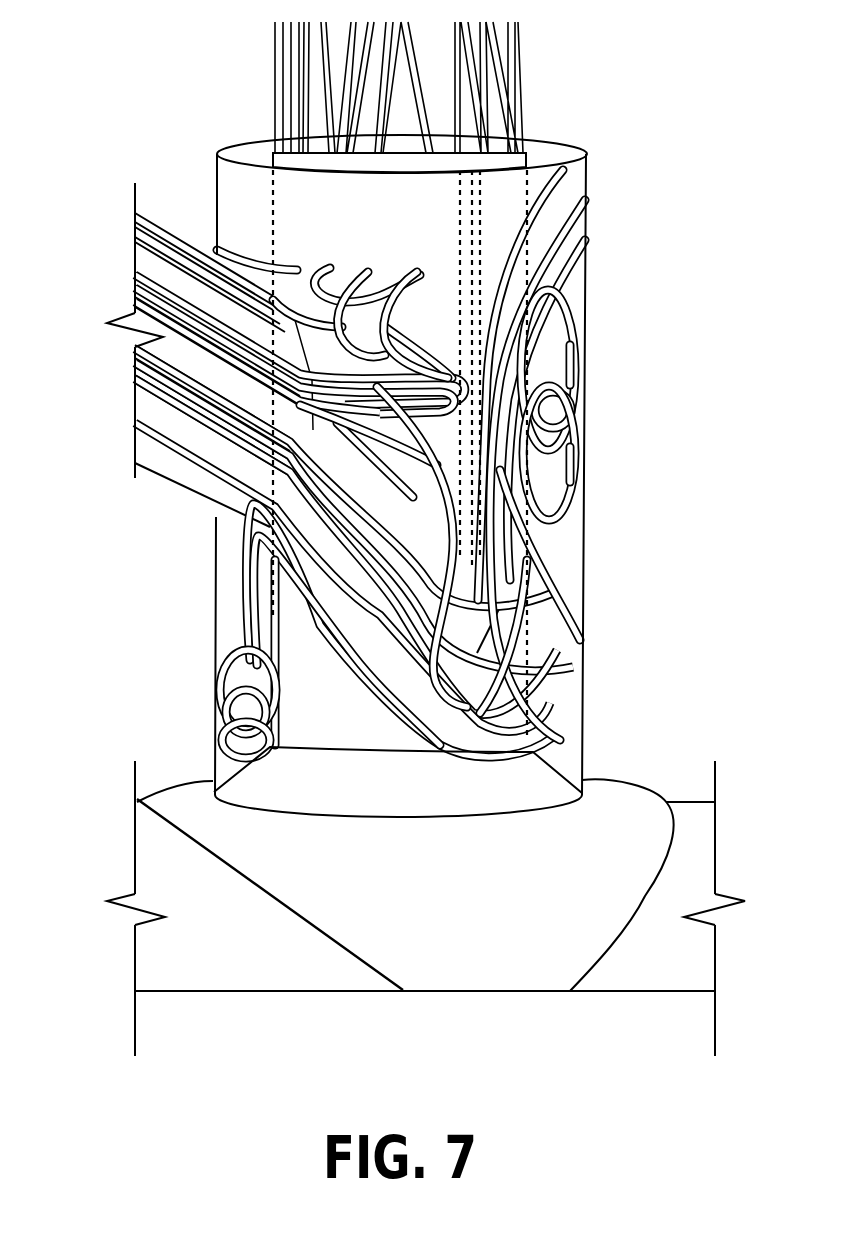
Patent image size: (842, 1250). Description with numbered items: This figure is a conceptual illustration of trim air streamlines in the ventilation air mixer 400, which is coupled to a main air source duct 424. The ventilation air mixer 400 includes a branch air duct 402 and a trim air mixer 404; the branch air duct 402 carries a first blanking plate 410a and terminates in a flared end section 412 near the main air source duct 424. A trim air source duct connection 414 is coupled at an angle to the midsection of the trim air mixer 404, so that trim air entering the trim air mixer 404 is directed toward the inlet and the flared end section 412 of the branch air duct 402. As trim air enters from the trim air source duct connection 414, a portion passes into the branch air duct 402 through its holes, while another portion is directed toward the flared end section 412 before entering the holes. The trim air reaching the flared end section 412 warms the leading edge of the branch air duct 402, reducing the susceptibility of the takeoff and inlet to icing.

The ventilation air mixer 400 is at (80, 76).
The branch air duct 402 is at (273, 160).
The trim air mixer 404 is at (586, 268).
The first blanking plate 410a is at (460, 248).
The flared end section 412 is at (214, 779).
The trim air source duct connection 414 is at (135, 288).
The main air source duct 424 is at (715, 819).